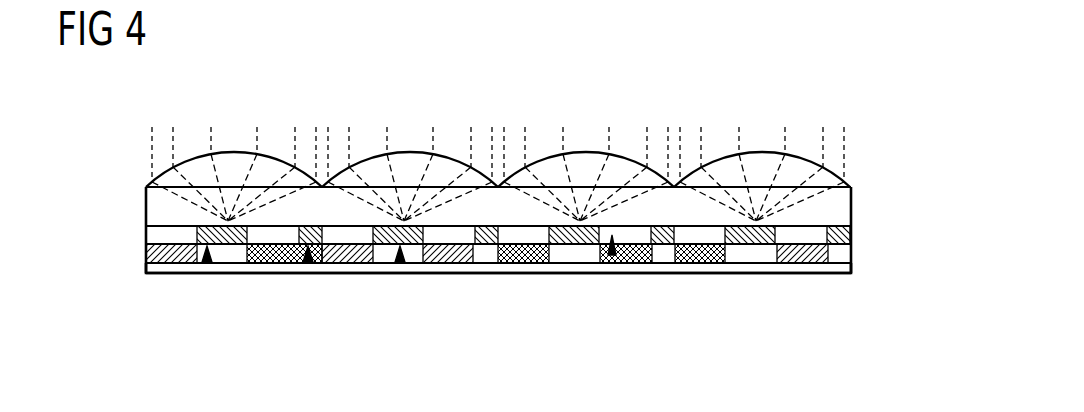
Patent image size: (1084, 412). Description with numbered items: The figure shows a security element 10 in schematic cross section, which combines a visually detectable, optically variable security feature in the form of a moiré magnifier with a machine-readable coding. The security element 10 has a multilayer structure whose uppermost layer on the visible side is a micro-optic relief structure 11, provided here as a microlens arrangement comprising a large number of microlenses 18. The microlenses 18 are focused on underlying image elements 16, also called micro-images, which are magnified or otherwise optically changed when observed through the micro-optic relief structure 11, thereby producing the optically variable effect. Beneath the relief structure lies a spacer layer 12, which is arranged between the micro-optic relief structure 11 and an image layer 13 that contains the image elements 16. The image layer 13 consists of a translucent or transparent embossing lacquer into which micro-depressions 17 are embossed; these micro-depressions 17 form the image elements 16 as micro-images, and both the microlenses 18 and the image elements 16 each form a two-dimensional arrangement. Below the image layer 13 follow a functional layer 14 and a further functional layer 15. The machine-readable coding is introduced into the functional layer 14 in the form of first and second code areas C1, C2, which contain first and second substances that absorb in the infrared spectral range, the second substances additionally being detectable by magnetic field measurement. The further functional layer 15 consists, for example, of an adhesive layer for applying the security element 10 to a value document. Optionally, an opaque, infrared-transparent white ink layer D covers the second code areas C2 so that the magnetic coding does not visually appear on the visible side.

The security element 10 is at (843, 95).
The micro-optic relief structure 11 is at (870, 160).
The spacer layer 12 is at (874, 206).
The image layer 13 is at (122, 232).
The functional layer 14 is at (537, 209).
The further functional layer 15 is at (120, 263).
The image elements 16 is at (308, 262).
The micro-depressions 17 is at (400, 262).
The microlenses 18 is at (230, 163).
The first code areas C1 is at (183, 250).
The second code areas C2 is at (273, 248).
The ink layer D is at (612, 255).